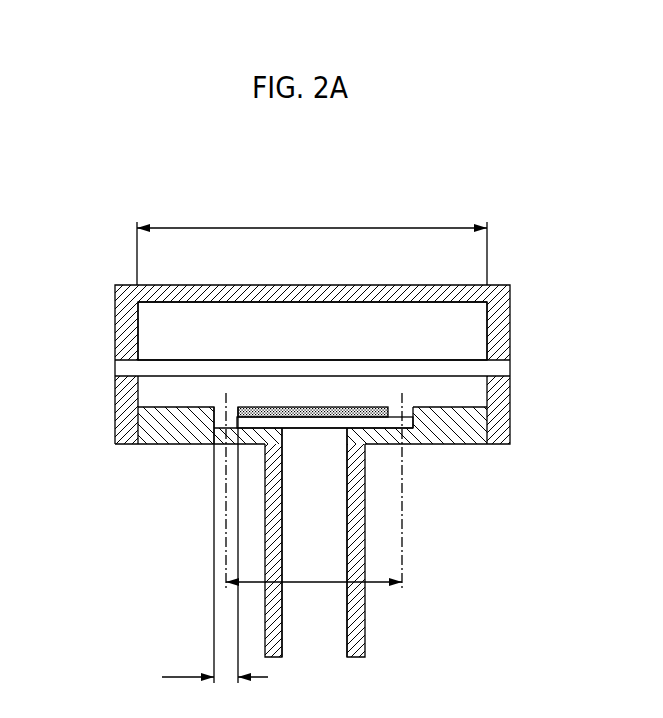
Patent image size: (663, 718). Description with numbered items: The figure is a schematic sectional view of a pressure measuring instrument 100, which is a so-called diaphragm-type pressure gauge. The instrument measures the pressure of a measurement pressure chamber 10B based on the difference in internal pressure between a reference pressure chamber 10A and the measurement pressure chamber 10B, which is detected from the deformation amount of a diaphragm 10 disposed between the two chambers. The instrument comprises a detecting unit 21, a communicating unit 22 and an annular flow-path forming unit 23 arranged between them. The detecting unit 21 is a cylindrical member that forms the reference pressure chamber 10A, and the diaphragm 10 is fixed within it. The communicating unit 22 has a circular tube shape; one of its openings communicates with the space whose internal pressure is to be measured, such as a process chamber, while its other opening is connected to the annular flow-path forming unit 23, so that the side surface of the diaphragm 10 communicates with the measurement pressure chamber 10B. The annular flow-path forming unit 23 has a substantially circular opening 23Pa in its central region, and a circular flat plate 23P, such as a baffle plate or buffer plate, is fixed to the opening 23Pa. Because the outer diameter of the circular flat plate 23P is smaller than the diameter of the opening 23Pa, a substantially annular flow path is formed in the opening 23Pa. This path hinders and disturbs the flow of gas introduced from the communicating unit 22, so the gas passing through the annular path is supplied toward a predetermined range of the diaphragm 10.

The pressure measuring instrument 100 is at (70, 173).
The diaphragm 10 is at (472, 363).
The reference pressure chamber 10A is at (468, 312).
The measurement pressure chamber 10B is at (335, 622).
The detecting unit 21 is at (110, 325).
The communicating unit 22 is at (254, 496).
The annular flow-path forming unit 23 is at (473, 437).
The circular flat plate 23P is at (382, 418).
The opening 23Pa is at (410, 428).